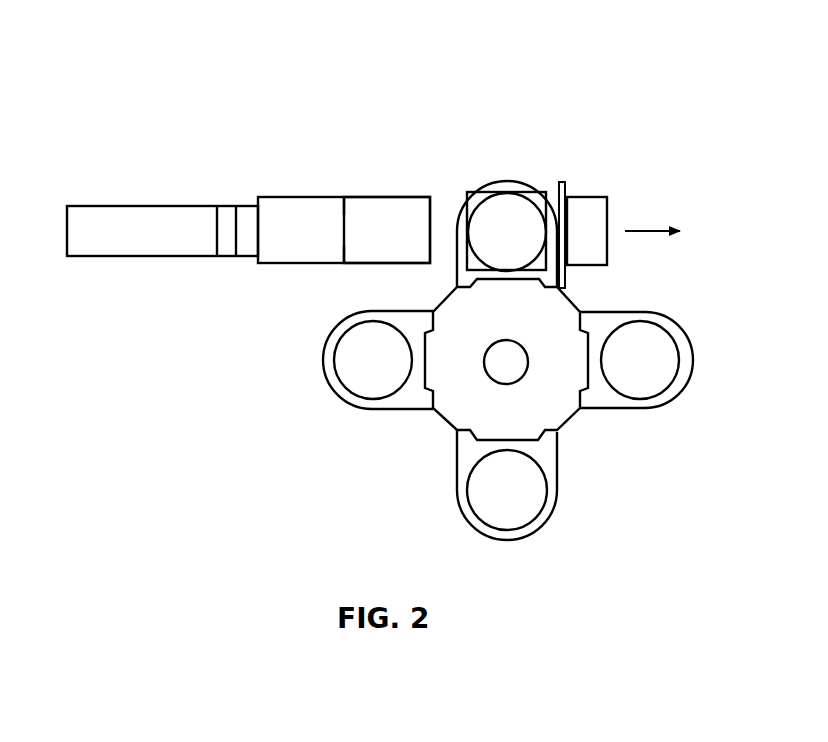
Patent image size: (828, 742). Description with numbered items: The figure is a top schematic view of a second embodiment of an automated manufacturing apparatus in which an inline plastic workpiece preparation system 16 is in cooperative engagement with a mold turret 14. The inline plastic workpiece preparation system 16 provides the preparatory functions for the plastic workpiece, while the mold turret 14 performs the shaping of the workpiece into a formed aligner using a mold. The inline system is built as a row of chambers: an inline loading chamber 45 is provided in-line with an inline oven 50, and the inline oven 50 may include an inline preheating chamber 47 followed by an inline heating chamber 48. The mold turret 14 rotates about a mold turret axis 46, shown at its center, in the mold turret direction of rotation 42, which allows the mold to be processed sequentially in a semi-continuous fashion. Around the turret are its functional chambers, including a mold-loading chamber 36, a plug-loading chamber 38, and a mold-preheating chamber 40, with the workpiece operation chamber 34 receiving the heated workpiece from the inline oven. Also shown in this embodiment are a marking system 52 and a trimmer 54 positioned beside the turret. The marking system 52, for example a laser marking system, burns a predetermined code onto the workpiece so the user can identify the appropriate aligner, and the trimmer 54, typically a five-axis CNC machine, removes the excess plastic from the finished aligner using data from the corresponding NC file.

The mold turret 14 is at (513, 131).
The inline plastic workpiece preparation system 16 is at (168, 58).
The first cartridge receptacle 34 is at (507, 192).
The mold-loading chamber 36 is at (373, 322).
The plug-loading chamber 38 is at (508, 530).
The mold-preheating chamber 40 is at (640, 322).
The mold turret direction of rotation 42 is at (416, 518).
The inline loading chamber 45 is at (140, 206).
The mold turret axis 46 is at (506, 340).
The inline preheating chamber 47 is at (300, 197).
The inline heating chamber 48 is at (410, 197).
The inline oven 50 is at (301, 128).
The marking system 52 is at (561, 182).
The trimmer 54 is at (589, 197).